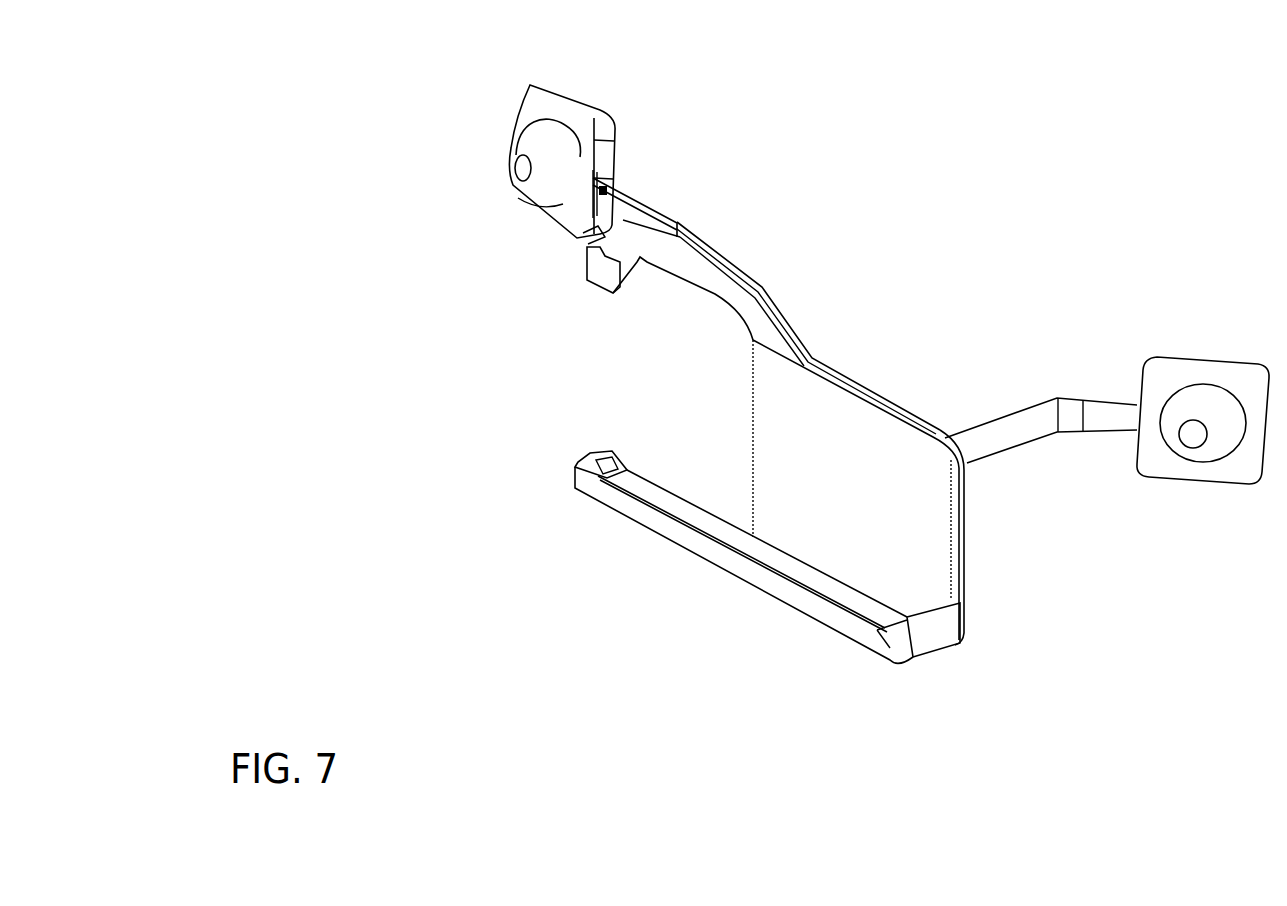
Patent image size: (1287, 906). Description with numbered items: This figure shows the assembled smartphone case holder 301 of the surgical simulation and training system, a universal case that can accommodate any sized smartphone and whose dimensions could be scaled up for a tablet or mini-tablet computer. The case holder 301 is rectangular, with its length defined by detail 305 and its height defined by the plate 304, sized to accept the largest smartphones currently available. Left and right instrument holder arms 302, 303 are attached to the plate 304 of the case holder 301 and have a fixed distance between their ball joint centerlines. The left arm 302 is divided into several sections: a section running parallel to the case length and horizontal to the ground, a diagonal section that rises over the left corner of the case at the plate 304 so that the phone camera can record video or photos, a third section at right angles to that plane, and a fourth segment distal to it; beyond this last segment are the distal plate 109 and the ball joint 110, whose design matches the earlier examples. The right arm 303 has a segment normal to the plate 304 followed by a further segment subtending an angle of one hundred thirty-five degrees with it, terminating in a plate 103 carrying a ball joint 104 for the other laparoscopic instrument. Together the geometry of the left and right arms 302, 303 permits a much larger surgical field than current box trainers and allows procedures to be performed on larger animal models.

The terminal plate 103 is at (1229, 354).
The ball joint 104 is at (1217, 462).
The distal plate 109 is at (660, 70).
The ball joint 110 is at (525, 198).
The smart phone case holder 301 is at (673, 594).
The left instrument holder arm 302 is at (656, 284).
The right instrument holder arm 303 is at (1031, 397).
The plate of the case holder 304 is at (975, 556).
The case length detail 305 is at (588, 450).